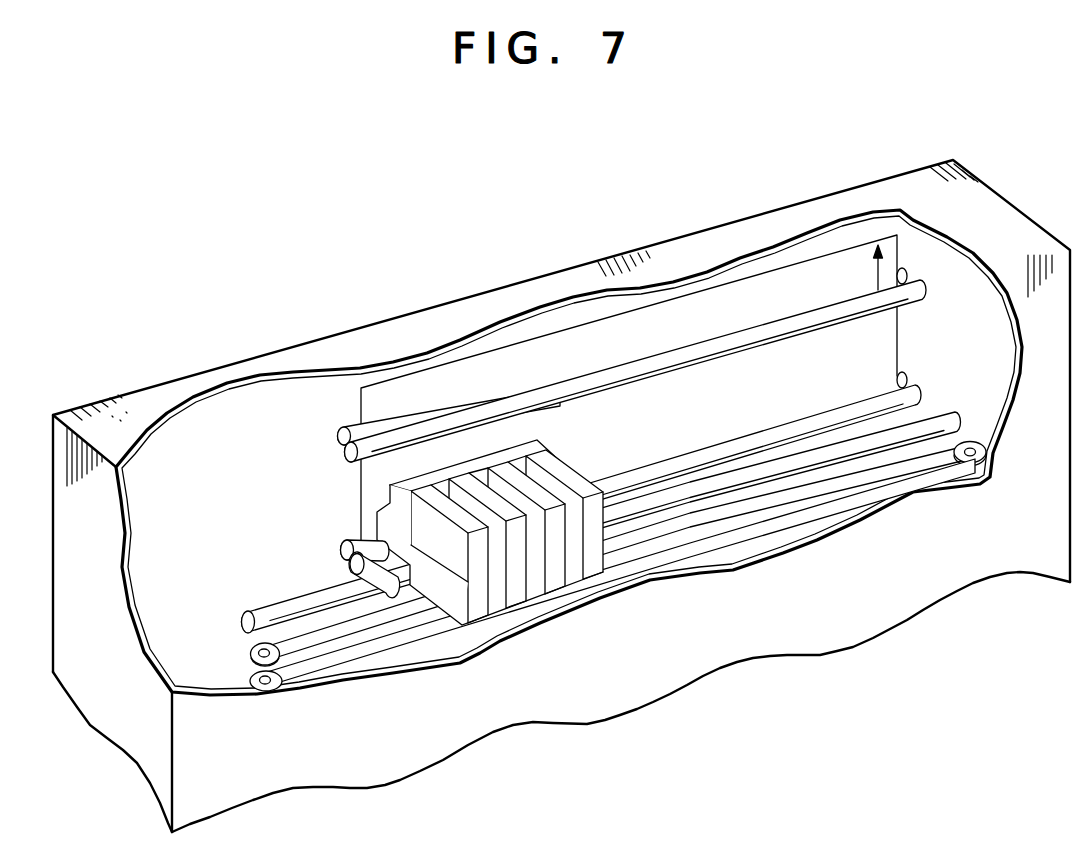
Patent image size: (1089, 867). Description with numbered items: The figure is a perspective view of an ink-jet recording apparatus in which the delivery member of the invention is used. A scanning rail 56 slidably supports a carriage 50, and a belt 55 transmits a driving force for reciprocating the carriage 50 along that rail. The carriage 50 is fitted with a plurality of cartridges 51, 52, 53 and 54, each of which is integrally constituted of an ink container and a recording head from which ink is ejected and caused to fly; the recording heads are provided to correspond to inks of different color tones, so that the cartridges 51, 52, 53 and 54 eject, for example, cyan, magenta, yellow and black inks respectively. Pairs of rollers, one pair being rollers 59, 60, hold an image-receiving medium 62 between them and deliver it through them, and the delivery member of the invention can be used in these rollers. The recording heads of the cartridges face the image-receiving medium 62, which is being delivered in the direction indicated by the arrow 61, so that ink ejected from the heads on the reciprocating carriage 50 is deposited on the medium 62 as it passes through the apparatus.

The carriage 50 is at (437, 594).
The cartridge 51 is at (578, 561).
The cartridge 52 is at (531, 571).
The cartridge 53 is at (489, 587).
The cartridge 54 is at (450, 597).
The belt 55 is at (619, 554).
The scanning rail 56 is at (621, 492).
The roller 59 is at (658, 357).
The roller 60 is at (642, 338).
The arrow 61 is at (851, 269).
The image-receiving medium 62 is at (605, 340).